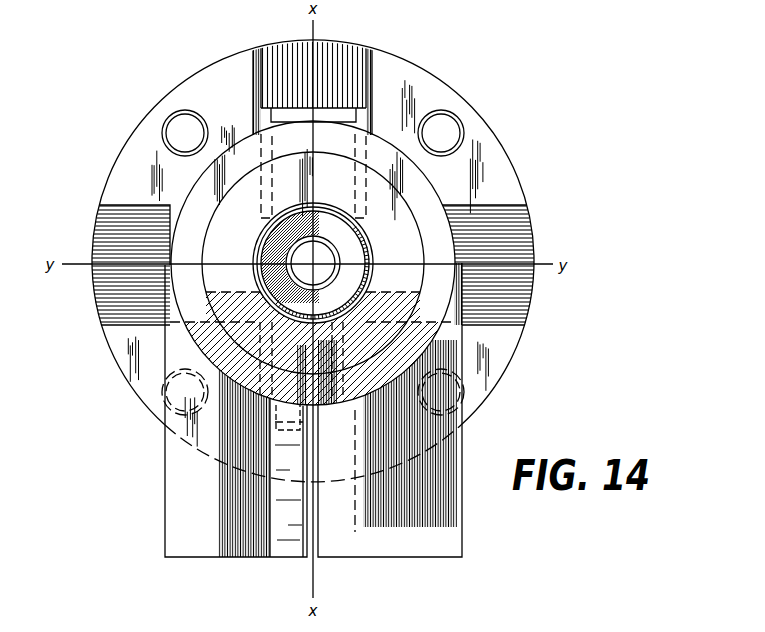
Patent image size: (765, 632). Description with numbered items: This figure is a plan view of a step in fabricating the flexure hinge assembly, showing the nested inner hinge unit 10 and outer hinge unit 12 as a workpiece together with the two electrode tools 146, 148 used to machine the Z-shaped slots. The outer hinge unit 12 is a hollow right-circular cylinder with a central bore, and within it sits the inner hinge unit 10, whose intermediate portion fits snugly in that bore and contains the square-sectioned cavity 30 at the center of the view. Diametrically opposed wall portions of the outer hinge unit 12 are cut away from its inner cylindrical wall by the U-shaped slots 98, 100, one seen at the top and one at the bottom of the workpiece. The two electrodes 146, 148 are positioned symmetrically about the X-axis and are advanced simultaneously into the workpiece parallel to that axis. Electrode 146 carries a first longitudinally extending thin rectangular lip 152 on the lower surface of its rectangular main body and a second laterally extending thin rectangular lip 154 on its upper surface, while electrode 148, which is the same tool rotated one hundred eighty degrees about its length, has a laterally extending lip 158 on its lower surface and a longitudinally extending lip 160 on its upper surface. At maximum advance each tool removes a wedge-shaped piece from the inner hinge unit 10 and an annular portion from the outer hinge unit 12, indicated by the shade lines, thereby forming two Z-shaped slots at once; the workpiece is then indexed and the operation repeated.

The inner hinge unit 10 is at (244, 216).
The outer hinge unit 12 is at (229, 97).
The cavity 30 is at (257, 233).
The U-shaped slot 98 is at (316, 417).
The U-shaped slot 100 is at (338, 108).
The electrode tool 146 is at (375, 532).
The electrode tool 148 is at (229, 521).
The first longitudinally extending thin rectangular lip 152 is at (396, 288).
The second laterally extending thin rectangular lip 154 is at (342, 548).
The first thin rectangular lip 158 is at (283, 548).
The second thin rectangular lip 160 is at (234, 290).